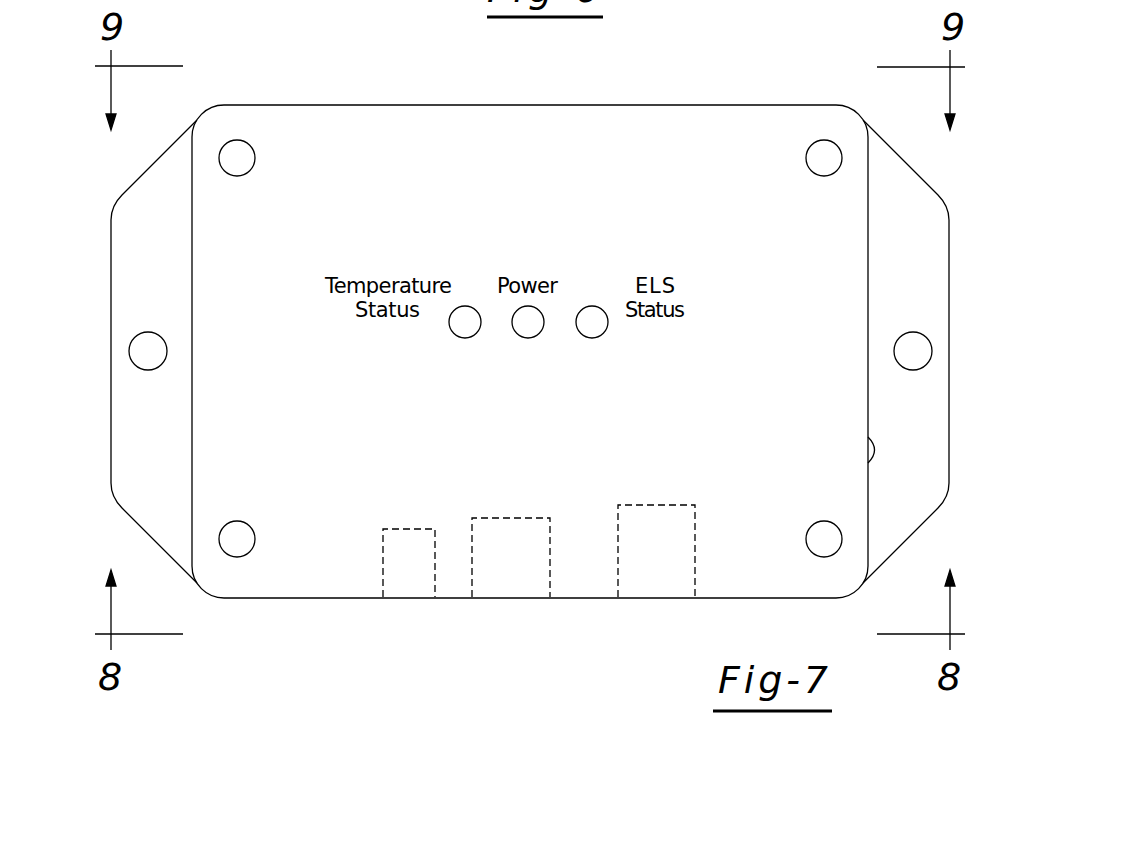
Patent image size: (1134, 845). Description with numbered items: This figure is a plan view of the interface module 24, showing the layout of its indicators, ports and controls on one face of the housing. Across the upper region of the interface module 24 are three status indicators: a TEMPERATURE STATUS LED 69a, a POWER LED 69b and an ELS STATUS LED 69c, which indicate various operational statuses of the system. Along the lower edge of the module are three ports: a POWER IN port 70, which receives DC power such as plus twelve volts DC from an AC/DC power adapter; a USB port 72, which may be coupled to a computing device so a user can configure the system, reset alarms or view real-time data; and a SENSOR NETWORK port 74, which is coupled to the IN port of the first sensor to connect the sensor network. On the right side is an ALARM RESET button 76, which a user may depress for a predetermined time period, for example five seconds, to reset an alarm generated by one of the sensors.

The interface module 24 is at (100, 217).
The TEMPERATURE STATUS LED 69a is at (464, 322).
The POWER LED 69b is at (534, 316).
The ELS STATUS LED 69c is at (594, 322).
The POWER IN port 70 is at (410, 597).
The USB port 72 is at (523, 597).
The SENSOR NETWORK port 74 is at (655, 597).
The ALARM RESET button 76 is at (878, 452).